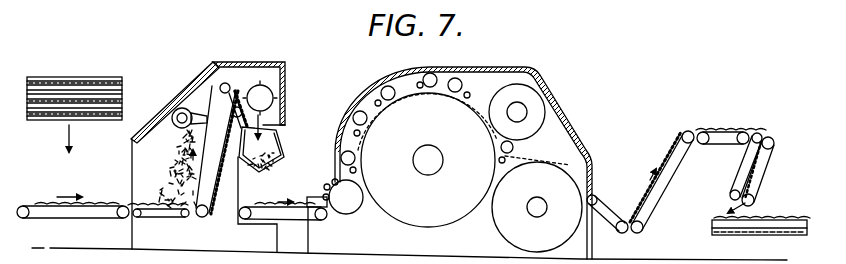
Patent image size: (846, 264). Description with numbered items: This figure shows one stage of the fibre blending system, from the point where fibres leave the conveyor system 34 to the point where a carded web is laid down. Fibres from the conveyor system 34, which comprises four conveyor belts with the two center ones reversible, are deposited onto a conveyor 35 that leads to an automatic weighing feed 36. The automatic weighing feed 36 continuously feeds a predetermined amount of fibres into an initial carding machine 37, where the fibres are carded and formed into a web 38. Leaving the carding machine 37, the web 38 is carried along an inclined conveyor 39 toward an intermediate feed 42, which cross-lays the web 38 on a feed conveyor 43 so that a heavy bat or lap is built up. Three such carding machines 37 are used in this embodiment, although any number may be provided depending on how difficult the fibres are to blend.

The conveyor system 34 is at (98, 77).
The conveyor 35 is at (35, 203).
The automatic weighing feed 36 is at (217, 62).
The initial carding machine 37 is at (485, 67).
The web 38 is at (715, 130).
The inclined conveyor 39 is at (652, 222).
The intermediate feed 42 is at (759, 139).
The feed conveyor 43 is at (783, 236).